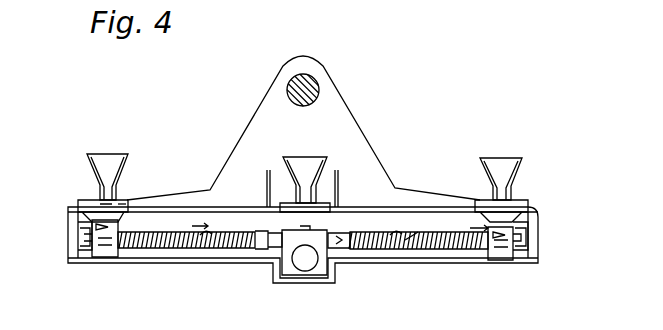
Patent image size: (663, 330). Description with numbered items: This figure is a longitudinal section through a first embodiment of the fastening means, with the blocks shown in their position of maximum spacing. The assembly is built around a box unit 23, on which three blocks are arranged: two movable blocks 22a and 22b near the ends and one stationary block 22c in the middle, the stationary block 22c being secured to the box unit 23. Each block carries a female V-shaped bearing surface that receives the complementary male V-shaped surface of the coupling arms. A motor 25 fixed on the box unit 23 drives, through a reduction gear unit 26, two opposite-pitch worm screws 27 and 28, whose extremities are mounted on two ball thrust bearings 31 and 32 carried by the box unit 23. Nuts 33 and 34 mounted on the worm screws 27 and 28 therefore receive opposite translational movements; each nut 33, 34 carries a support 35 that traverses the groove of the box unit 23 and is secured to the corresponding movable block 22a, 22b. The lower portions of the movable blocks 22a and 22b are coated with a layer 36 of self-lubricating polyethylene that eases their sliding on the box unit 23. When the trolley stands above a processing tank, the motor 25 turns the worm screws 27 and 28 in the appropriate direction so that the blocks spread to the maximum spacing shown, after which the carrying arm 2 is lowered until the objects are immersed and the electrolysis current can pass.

The carrying arm 2 is at (310, 84).
The movable block 22a is at (130, 176).
The movable block 22b is at (488, 178).
The stationary block 22c is at (318, 172).
The box unit 23 is at (420, 262).
The motor 25 is at (305, 262).
The reduction gear unit 26 is at (292, 243).
The worm screw 27 is at (166, 247).
The worm screw 28 is at (417, 238).
The ball thrust bearing 31 is at (68, 222).
The ball thrust bearing 32 is at (538, 223).
The nut 33 is at (105, 250).
The nut 34 is at (497, 258).
The support 35 is at (128, 206).
The layer of self-lubricating polyethylene 36 is at (86, 204).